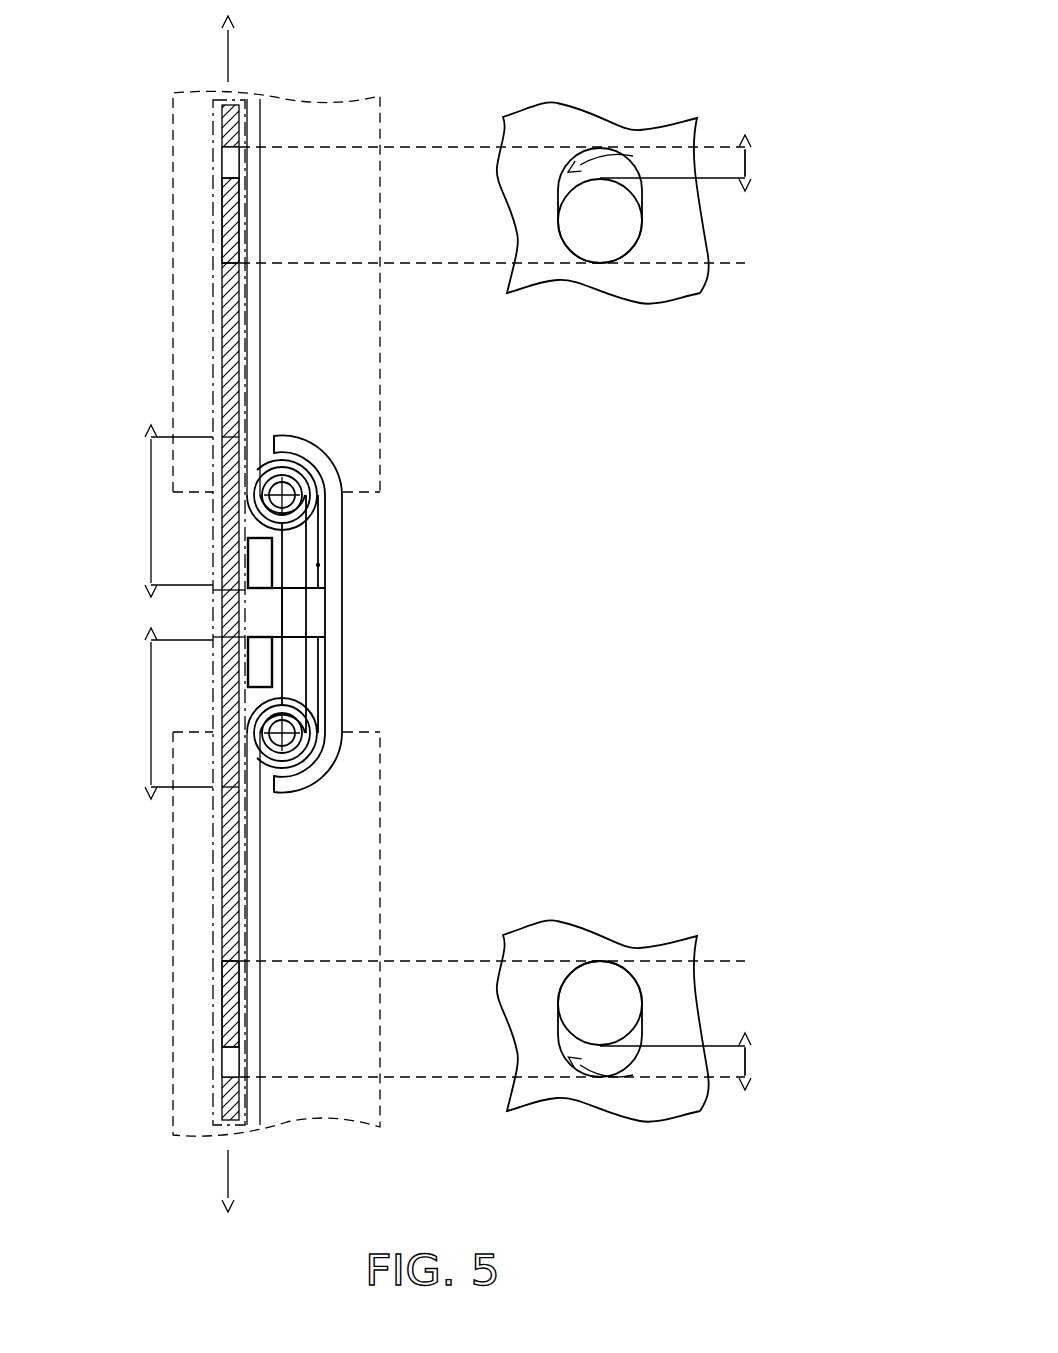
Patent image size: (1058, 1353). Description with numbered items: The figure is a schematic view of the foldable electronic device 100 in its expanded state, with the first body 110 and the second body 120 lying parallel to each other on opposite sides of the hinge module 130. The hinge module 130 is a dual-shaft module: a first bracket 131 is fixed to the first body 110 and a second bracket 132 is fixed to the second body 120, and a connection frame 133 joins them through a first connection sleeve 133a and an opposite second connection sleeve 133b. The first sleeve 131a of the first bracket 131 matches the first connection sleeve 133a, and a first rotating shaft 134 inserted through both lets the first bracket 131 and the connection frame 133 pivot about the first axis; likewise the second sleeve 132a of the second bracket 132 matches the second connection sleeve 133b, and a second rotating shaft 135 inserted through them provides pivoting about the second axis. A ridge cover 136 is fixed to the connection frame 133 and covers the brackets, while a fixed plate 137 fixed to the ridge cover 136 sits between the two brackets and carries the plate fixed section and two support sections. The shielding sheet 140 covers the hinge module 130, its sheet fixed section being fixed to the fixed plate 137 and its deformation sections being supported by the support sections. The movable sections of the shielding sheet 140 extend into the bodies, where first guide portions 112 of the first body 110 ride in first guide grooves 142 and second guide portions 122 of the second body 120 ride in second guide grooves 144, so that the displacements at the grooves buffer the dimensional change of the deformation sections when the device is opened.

The foldable electronic device 100 is at (425, 98).
The first body 110 is at (310, 128).
The first guide portion 112 is at (233, 200).
The second body 120 is at (348, 1105).
The second guide portion 122 is at (220, 1002).
The hinge module 130 is at (368, 596).
The first bracket 131 is at (255, 325).
The first sleeve 131a is at (300, 455).
The second bracket 132 is at (253, 1113).
The second sleeve 132a is at (270, 775).
The connection frame 133 is at (340, 570).
The first connection sleeve 133a is at (276, 440).
The second connection sleeve 133b is at (285, 795).
The first rotating shaft 134 is at (296, 490).
The second rotating shaft 135 is at (296, 740).
The ridge cover 136 is at (325, 640).
The fixed plate 137 is at (262, 612).
The shielding sheet 140 is at (220, 340).
The first guide groove 142 is at (228, 162).
The second guide groove 144 is at (223, 1062).